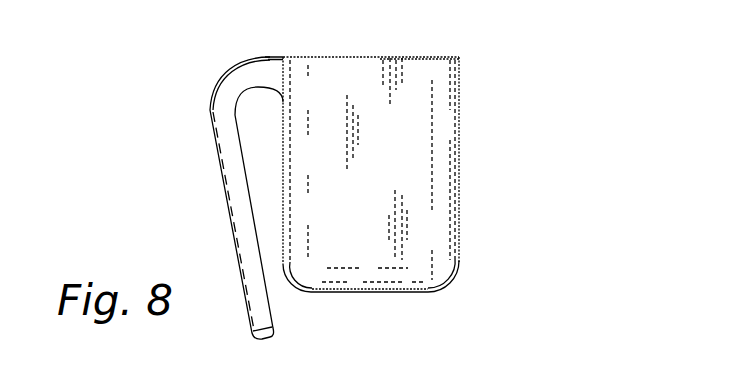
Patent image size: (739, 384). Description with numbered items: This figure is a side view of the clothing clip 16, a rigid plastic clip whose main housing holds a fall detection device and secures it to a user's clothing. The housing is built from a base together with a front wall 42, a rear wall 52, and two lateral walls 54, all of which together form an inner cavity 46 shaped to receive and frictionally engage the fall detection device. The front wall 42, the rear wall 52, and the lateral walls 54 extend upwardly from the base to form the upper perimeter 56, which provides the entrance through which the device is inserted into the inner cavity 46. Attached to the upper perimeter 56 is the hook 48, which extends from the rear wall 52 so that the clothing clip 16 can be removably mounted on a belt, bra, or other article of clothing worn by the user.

The clothing clip 16 is at (519, 98).
The front wall 42 is at (459, 218).
The inner cavity 46 is at (362, 42).
The hook 48 is at (228, 177).
The rear wall 52 is at (258, 56).
The lateral walls 54 is at (405, 166).
The upper perimeter 56 is at (430, 56).